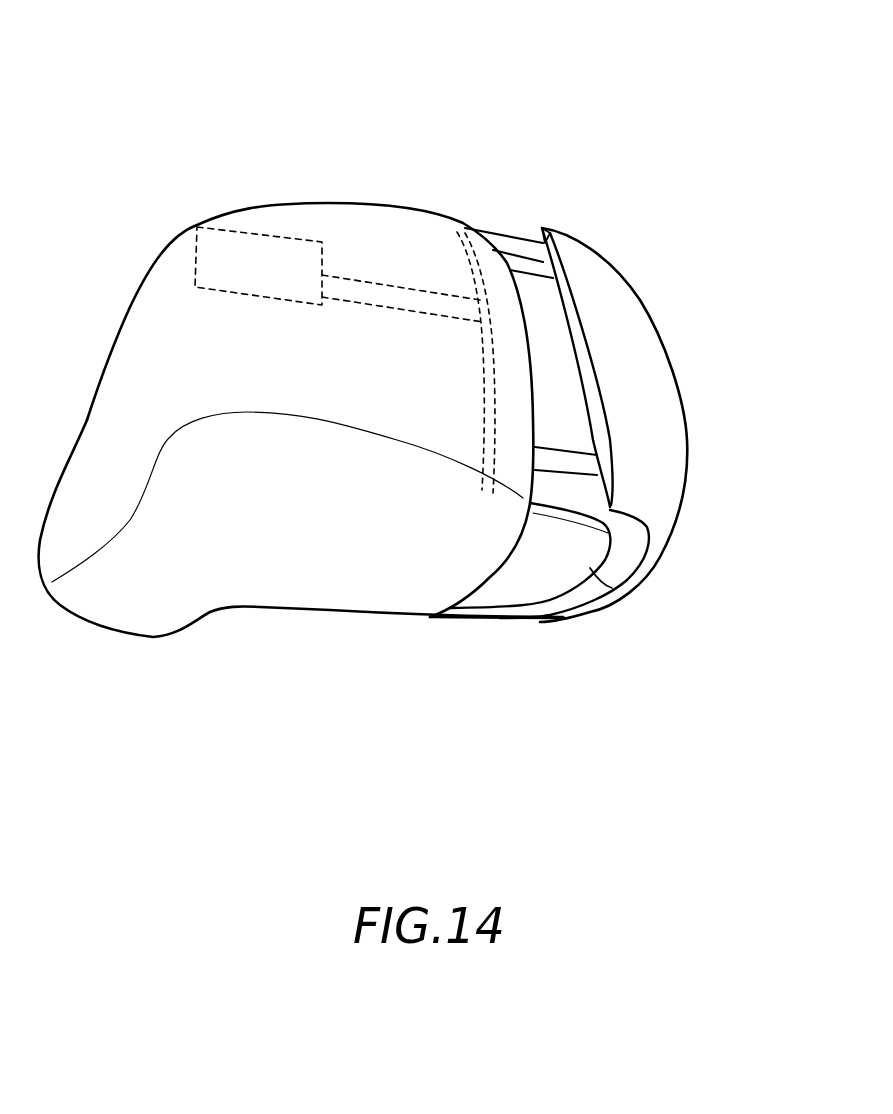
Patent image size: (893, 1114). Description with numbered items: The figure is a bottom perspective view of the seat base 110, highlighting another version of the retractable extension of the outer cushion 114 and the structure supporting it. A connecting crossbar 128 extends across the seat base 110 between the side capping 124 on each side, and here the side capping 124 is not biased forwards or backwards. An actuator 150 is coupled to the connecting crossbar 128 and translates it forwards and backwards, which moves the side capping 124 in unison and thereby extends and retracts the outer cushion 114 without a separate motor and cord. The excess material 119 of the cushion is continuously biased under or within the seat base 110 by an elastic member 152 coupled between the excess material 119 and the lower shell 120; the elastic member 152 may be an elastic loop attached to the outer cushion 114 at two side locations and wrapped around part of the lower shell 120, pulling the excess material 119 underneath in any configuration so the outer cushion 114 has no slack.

The seat base 110 is at (470, 92).
The lower shell 120 is at (382, 525).
The actuator 150 is at (273, 260).
The connecting crossbar 128 is at (488, 263).
The elastic member 152 is at (533, 268).
The excess material 119 is at (670, 427).
The side capping 124 is at (612, 588).
The outer cushion 114 is at (565, 618).